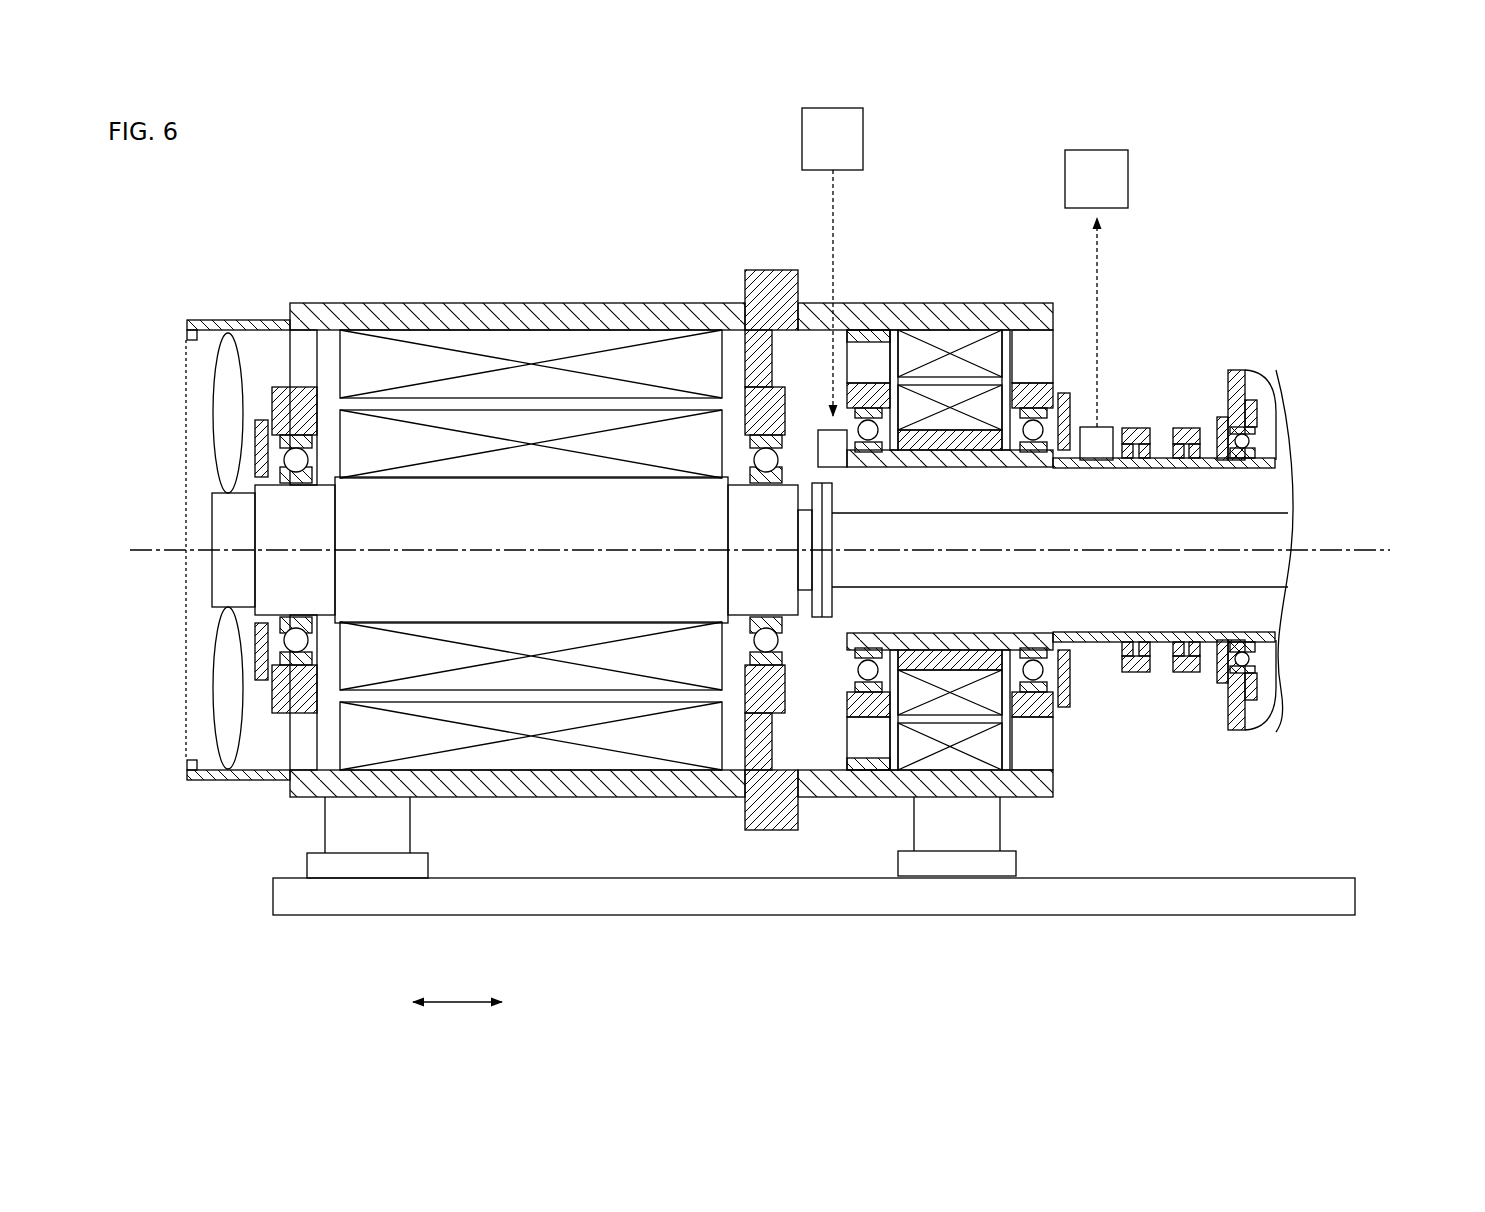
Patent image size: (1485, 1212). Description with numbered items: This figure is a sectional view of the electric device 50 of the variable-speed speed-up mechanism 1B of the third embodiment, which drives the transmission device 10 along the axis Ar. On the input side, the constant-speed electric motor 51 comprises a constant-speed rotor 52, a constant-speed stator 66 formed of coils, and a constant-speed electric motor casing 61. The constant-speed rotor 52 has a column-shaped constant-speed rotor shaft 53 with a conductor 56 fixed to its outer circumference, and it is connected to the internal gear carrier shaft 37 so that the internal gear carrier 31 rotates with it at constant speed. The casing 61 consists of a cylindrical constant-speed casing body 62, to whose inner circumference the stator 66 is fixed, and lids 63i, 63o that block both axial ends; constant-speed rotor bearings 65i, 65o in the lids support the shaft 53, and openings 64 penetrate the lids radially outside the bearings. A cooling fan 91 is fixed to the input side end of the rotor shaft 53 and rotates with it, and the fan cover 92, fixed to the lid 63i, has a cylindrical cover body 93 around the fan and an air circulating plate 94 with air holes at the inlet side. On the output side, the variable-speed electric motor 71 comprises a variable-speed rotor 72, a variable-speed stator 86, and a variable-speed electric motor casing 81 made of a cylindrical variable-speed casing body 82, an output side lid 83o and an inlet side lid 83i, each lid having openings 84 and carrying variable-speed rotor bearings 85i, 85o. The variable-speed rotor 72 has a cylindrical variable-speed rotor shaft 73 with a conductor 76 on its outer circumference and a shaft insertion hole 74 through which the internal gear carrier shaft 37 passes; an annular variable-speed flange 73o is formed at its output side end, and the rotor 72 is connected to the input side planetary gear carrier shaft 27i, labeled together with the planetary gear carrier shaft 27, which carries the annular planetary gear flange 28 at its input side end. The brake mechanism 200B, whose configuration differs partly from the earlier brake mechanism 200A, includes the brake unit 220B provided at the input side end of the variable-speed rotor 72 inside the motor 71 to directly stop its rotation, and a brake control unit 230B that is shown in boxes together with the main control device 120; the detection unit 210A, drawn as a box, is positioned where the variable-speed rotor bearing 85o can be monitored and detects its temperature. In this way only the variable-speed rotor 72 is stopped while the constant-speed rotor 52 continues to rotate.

The variable-speed speed-up mechanism 1B is at (1333, 223).
The transmission device 10 is at (1302, 679).
The input side planetary gear carrier shaft 27i is at (1258, 452).
The sleeve 27 is at (1164, 550).
The planetary gear flange 28 is at (1197, 423).
The internal gear carrier shaft 37 is at (1265, 580).
The internal gear carrier 31 is at (750, 550).
The electric device 50 is at (302, 292).
The constant-speed electric motor 51 is at (318, 262).
The constant-speed rotor 52 is at (476, 690).
The constant-speed rotor shaft 53 is at (630, 598).
The conductor 56 is at (545, 680).
The constant-speed electric motor casing 61 is at (560, 300).
The constant-speed casing body 62 is at (608, 305).
The lid 63i is at (308, 312).
The lid 63o is at (757, 277).
The openings 64 is at (290, 357).
The constant-speed rotor bearing 65i is at (300, 455).
The constant-speed rotor bearing 65o is at (755, 455).
The constant-speed stator 66 is at (503, 345).
The variable-speed electric motor 71 is at (1062, 392).
The variable-speed rotor 72 is at (980, 960).
The variable-speed rotor shaft 73 is at (914, 658).
The variable-speed flange 73o is at (1126, 427).
The shaft insertion hole 74 is at (880, 630).
The conductor 76 is at (958, 705).
The variable-speed electric motor casing 81 is at (942, 300).
The variable-speed casing body 82 is at (968, 320).
The inlet side lid 83i is at (872, 418).
The output side lid 83o is at (1040, 301).
The openings 84 is at (881, 334).
The variable-speed rotor bearing 85i is at (856, 352).
The variable-speed rotor bearing 85o is at (1103, 437).
The variable-speed stator 86 is at (1003, 352).
The cooling fan 91 is at (222, 320).
The fan cover 92 is at (238, 878).
The cover body 93 is at (213, 783).
The air circulating plate 94 is at (183, 717).
The main control device 120 is at (865, 120).
The detector 200A is at (832, 318).
The brake mechanism 200B is at (965, 158).
The detection unit 210A is at (818, 428).
The brake unit 220B is at (1100, 428).
The brake control unit 230B is at (965, 158).
The axis Ar is at (1365, 547).